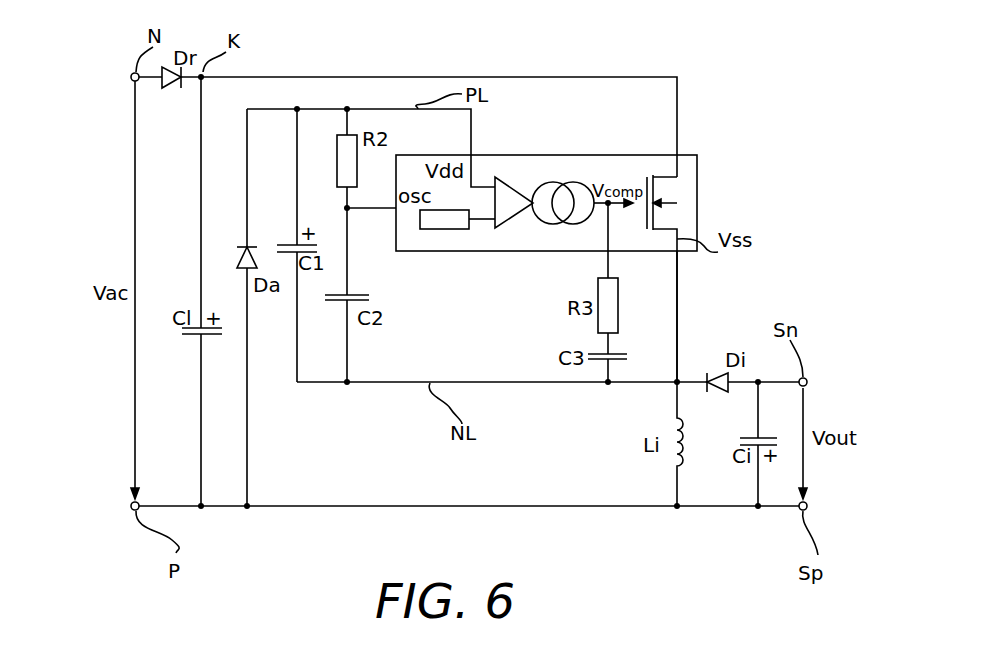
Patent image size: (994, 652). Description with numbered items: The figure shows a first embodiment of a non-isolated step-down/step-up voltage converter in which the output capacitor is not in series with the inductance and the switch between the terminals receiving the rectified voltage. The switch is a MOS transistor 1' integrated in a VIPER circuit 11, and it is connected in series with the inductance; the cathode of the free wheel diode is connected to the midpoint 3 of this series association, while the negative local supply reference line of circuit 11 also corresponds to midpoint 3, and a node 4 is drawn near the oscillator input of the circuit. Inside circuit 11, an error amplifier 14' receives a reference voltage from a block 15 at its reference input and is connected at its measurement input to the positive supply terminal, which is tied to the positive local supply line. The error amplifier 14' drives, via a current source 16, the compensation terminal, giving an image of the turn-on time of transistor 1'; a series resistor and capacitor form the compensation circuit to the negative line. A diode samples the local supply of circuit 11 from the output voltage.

The MOS transistor 1' is at (686, 278).
The midpoint 3 is at (679, 375).
The oscillator connection node 4 is at (347, 208).
The VIPER circuit 11 is at (580, 155).
The error amplifier 14' is at (528, 174).
The block 15 is at (445, 230).
The current source 16 is at (547, 225).